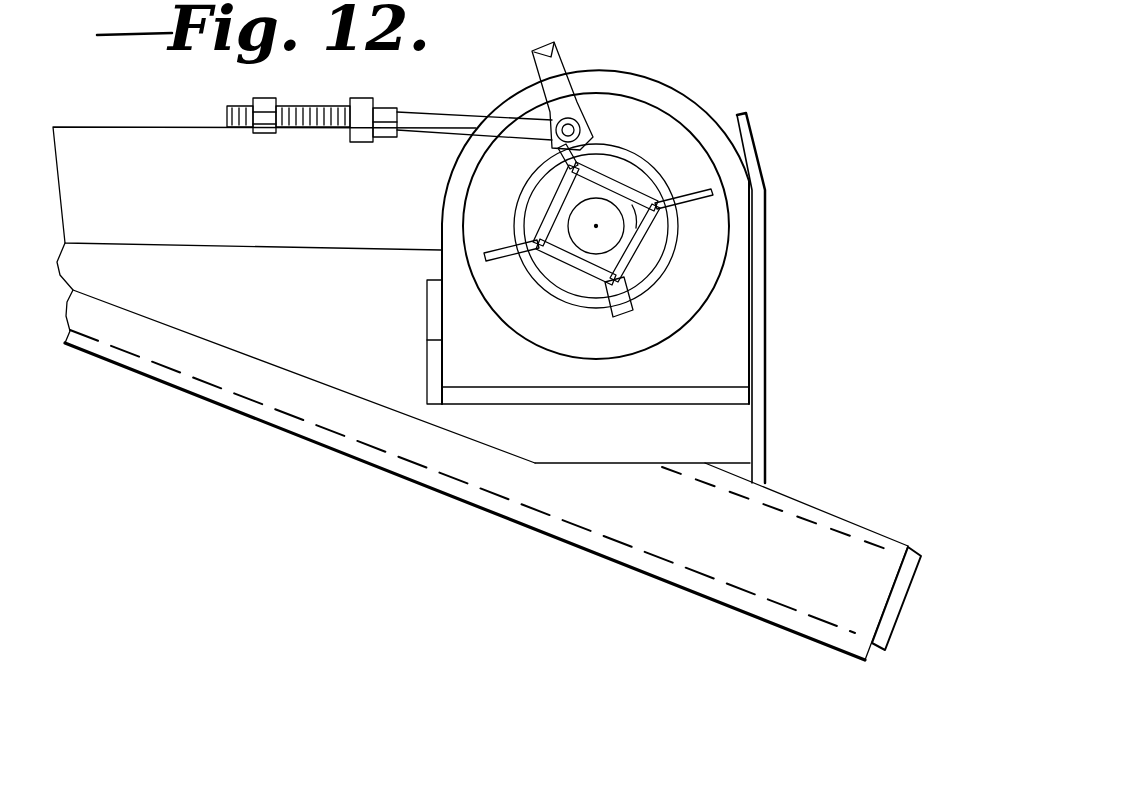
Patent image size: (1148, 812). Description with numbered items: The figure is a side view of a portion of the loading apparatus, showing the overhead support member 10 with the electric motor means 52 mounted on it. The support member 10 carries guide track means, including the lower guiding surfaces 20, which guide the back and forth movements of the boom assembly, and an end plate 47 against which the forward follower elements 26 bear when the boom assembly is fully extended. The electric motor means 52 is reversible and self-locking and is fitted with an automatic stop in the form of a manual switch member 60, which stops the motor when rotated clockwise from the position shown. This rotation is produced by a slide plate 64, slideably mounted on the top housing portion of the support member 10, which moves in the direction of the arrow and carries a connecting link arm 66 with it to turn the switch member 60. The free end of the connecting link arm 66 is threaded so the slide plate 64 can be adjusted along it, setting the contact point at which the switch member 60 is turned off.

The overhead support member 10 is at (152, 398).
The lower guiding surfaces 20 is at (540, 505).
The forward follower elements 26 is at (635, 75).
The end plate 47 is at (893, 640).
The electric motor means 52 is at (683, 113).
The manual switch member 60 is at (637, 267).
The slide plate 64 is at (317, 77).
The connecting link arm 66 is at (430, 131).